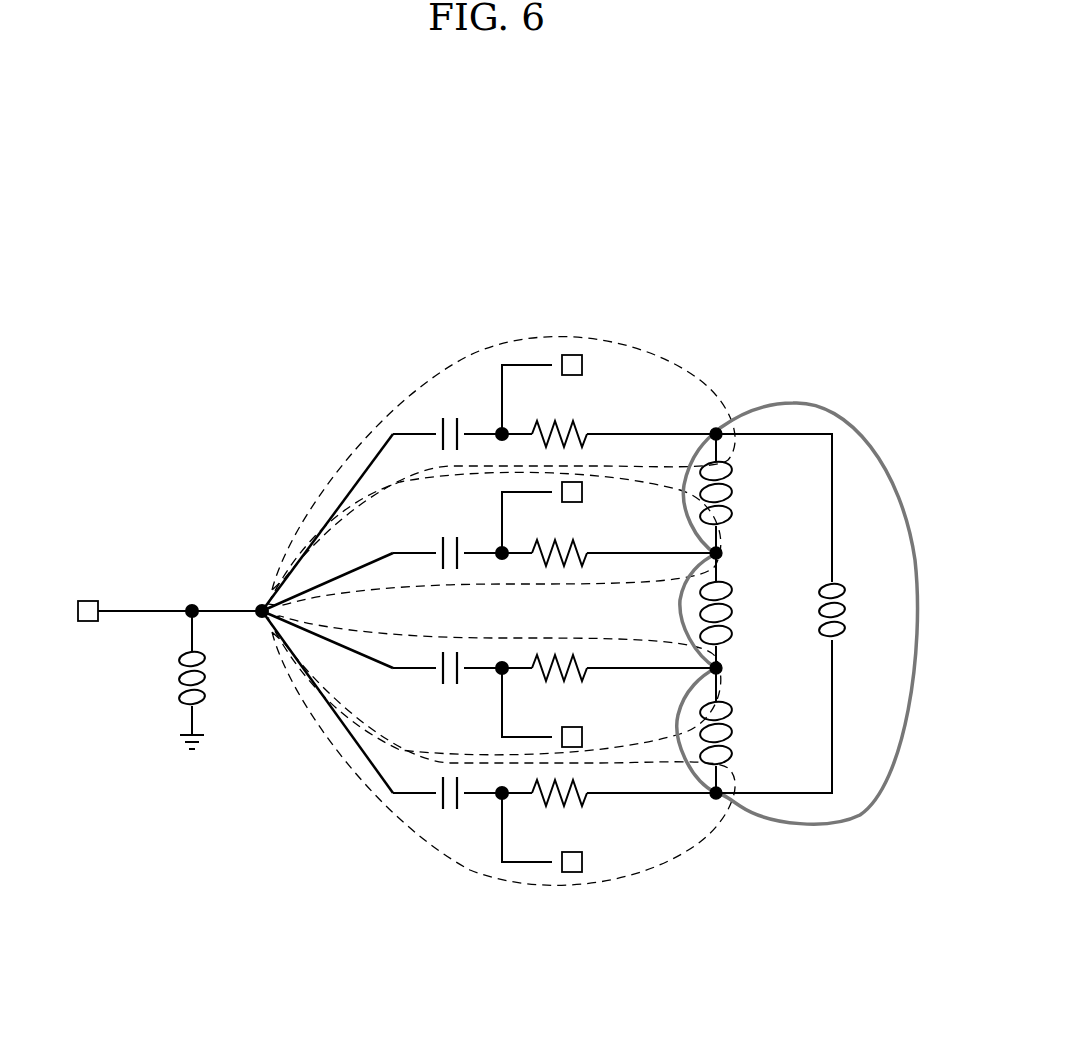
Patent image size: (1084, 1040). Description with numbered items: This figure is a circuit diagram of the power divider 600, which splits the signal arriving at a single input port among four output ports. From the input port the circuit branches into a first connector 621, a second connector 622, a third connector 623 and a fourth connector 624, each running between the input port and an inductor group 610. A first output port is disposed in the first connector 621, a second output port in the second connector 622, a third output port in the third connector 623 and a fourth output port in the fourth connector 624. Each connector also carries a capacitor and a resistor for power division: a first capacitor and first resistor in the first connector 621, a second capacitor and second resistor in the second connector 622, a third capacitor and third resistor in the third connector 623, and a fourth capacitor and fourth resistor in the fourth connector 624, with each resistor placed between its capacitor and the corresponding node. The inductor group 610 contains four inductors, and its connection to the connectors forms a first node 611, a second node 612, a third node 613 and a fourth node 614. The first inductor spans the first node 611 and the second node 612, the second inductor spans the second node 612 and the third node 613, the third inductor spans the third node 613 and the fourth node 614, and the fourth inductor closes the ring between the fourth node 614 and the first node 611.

The power divider 600 is at (590, 230).
The inductor group 610 is at (870, 446).
The first node 611 is at (716, 430).
The second node 612 is at (722, 550).
The third node 613 is at (722, 664).
The fourth node 614 is at (716, 800).
The first connector 621 is at (332, 449).
The second connector 622 is at (350, 532).
The third connector 623 is at (348, 687).
The fourth connector 624 is at (358, 806).